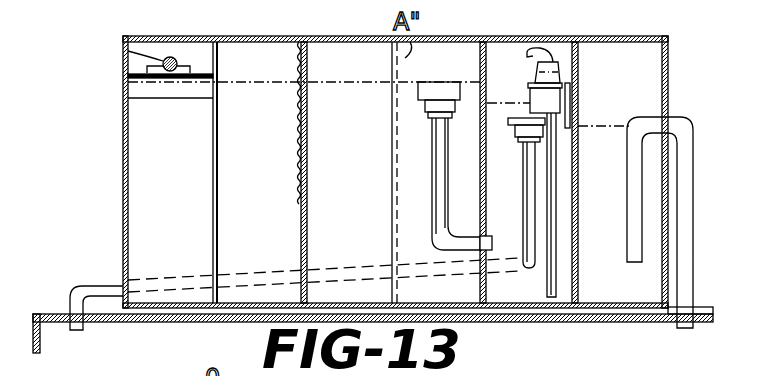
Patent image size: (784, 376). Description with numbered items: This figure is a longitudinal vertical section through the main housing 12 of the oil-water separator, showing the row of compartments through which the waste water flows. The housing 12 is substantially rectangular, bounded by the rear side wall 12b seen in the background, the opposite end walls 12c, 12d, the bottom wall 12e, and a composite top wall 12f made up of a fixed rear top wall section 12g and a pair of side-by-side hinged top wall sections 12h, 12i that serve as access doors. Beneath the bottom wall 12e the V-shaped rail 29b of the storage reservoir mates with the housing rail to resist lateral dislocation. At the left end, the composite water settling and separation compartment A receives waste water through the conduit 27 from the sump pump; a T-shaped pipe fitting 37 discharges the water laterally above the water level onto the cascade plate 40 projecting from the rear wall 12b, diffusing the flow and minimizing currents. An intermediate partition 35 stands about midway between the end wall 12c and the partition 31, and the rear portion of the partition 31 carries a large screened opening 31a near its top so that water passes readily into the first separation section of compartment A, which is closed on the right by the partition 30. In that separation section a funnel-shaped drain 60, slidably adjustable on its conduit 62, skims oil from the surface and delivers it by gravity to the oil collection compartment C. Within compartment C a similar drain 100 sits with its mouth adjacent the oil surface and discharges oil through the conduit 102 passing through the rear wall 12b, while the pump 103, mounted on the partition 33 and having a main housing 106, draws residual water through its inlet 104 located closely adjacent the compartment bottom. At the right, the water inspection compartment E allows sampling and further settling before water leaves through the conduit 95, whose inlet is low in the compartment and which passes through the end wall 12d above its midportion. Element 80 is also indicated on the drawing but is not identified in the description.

The main housing 12 is at (665, 38).
The rear side wall 12b is at (374, 69).
The end wall 12c is at (123, 137).
The end wall 12d is at (668, 74).
The bottom wall 12e is at (542, 313).
The composite top wall 12f is at (362, 36).
The fixed rear top wall section 12g is at (282, 36).
The hinged top wall section 12h is at (533, 368).
The hinged top wall section 12i is at (665, 375).
The conduit 27 is at (123, 53).
The V-shaped rail 29b is at (596, 315).
The partition 30 is at (451, 69).
The partition 31 is at (303, 235).
The screened opening 31a is at (300, 107).
The partition 33 is at (578, 70).
The intermediate partition 35 is at (213, 188).
The T-shaped pipe fitting 37 is at (183, 61).
The cascade plate 40 is at (178, 92).
The first drain 60 is at (418, 86).
The conduit 62 is at (433, 181).
The support 80 is at (482, 368).
The conduit 95 is at (638, 198).
The drain 100 is at (508, 118).
The conduit 102 is at (106, 288).
The pump 103 is at (556, 58).
The inlet 104 is at (545, 297).
The main housing 106 is at (553, 97).
The composite water settling and separation compartment A is at (141, 175).
The oil collection compartment C is at (505, 52).
The water inspection compartment E is at (642, 58).